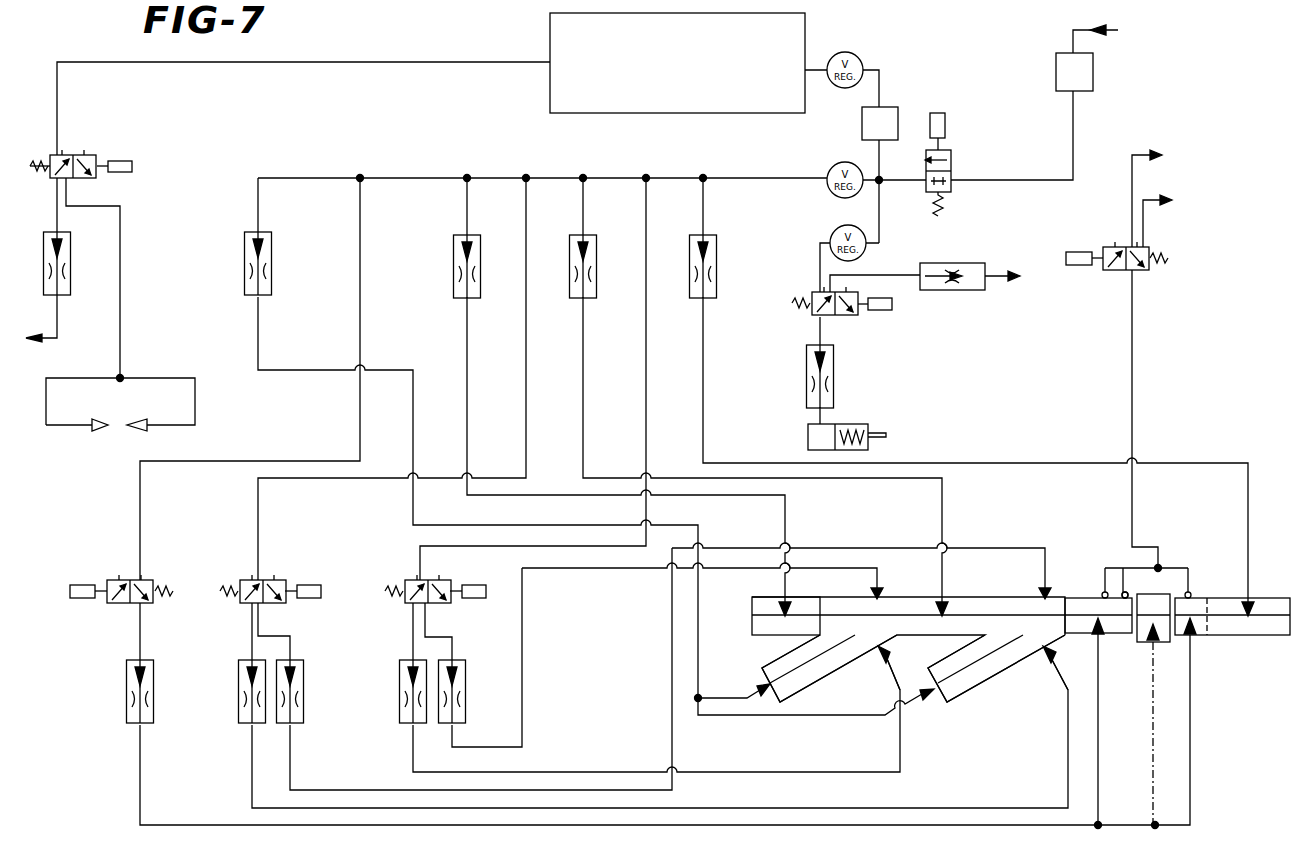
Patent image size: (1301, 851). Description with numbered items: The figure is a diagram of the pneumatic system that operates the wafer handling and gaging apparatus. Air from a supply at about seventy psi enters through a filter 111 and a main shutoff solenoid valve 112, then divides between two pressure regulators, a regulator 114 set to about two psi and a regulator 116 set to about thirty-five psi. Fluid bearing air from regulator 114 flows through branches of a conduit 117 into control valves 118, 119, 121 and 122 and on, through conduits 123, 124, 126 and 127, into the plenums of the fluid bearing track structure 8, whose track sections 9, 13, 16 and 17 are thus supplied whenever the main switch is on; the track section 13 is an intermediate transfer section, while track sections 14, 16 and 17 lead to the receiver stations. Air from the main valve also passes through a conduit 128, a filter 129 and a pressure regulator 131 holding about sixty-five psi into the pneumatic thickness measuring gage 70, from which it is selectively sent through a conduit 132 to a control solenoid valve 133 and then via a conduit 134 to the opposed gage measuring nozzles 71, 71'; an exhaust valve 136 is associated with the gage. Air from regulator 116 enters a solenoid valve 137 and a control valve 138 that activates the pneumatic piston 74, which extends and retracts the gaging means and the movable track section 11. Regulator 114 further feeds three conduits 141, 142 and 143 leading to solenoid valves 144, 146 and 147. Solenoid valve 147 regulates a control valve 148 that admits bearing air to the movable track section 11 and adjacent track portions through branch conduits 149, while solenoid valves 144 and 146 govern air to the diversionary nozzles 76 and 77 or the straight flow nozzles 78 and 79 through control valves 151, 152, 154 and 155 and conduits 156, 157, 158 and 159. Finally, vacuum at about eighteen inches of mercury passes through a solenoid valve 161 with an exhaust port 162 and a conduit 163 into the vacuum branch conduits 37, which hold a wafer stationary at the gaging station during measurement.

The pneumatic thickness measuring gage 70 is at (550, 37).
The conduit 132 is at (322, 62).
The control solenoid valve 133 is at (90, 151).
The exhaust valve 136 is at (43, 256).
The conduit 134 is at (119, 296).
The gage measuring nozzle 71' is at (120, 403).
The gage measuring nozzle 71 is at (103, 445).
The conduit 117 is at (783, 178).
The pressure regulator 131 is at (870, 36).
The filter 129 is at (884, 106).
The conduit 128 is at (880, 160).
The pressure regulator 114 is at (839, 162).
The main shutoff solenoid valve 112 is at (952, 172).
The filter 111 is at (1093, 75).
The pressure regulator 116 is at (842, 228).
The solenoid valve 137 is at (845, 316).
The control valve 138 is at (836, 380).
The pneumatic piston 74 is at (846, 422).
The solenoid valve 161 is at (1126, 274).
The exhaust port 162 is at (1174, 206).
The conduit 163 is at (1128, 370).
The vacuum branch conduits 37 is at (1104, 588).
The control valve 122 is at (276, 272).
The control valve 121 is at (481, 242).
The control valve 119 is at (598, 242).
The control valve 118 is at (720, 242).
The conduit 127 is at (262, 370).
The conduit 143 is at (362, 326).
The conduit 142 is at (526, 335).
The conduit 126 is at (468, 406).
The conduit 124 is at (582, 414).
The conduit 141 is at (646, 347).
The conduit 123 is at (704, 414).
The diversionary nozzle 76 is at (1052, 574).
The diversionary nozzle 77 is at (883, 594).
The conduit 159 is at (524, 629).
The conduit 158 is at (578, 770).
The straight flow nozzle 79 is at (888, 668).
The conduit 157 is at (348, 790).
The conduit 156 is at (250, 806).
The straight flow nozzle 78 is at (1054, 670).
The branch conduits 149 is at (1153, 729).
The solenoid valve 147 is at (152, 578).
The control valve 148 is at (153, 670).
The solenoid valve 146 is at (270, 578).
The control valve 151 is at (236, 724).
The control valve 152 is at (304, 710).
The solenoid valve 144 is at (435, 578).
The flow control 155 is at (398, 682).
The control valve 154 is at (464, 702).
The track section 13 is at (998, 580).
The track section 17 is at (804, 606).
The track section 16 is at (820, 674).
The track section 14 is at (976, 690).
The fluid bearing track structure 8 is at (1080, 594).
The movable track section 11 is at (1185, 592).
The track section 9 is at (1272, 596).